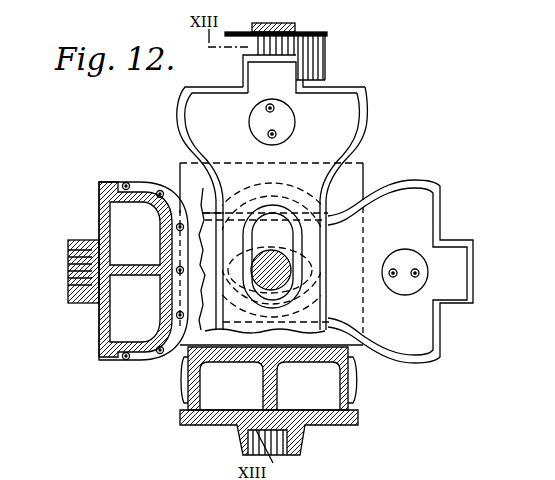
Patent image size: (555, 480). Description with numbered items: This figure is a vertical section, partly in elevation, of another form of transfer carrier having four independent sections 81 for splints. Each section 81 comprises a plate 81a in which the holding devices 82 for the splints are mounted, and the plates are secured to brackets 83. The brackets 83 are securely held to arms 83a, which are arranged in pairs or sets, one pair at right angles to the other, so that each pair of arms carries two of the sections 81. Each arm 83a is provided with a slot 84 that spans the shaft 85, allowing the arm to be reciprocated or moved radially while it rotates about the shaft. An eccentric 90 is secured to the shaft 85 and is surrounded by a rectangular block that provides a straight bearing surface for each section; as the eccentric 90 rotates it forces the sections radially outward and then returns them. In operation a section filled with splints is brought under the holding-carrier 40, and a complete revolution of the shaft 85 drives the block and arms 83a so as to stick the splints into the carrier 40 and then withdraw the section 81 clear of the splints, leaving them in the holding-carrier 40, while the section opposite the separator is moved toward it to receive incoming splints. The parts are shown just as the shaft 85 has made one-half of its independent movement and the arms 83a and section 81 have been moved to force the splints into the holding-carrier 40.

The holding-carrier 40 is at (331, 28).
The section 81 is at (264, 202).
The plate 81a is at (192, 427).
The holding devices 82 is at (68, 257).
The bracket 83 is at (141, 362).
The arm 83a is at (422, 205).
The slot 84 is at (270, 214).
The shaft 85 is at (288, 266).
The eccentric 90 is at (365, 172).